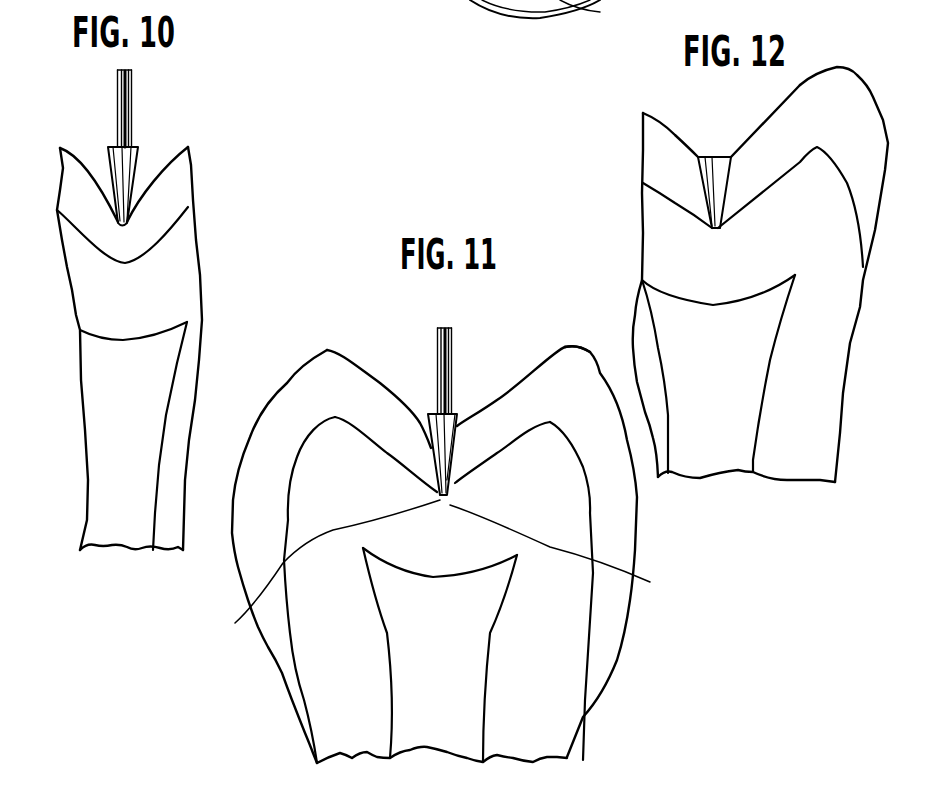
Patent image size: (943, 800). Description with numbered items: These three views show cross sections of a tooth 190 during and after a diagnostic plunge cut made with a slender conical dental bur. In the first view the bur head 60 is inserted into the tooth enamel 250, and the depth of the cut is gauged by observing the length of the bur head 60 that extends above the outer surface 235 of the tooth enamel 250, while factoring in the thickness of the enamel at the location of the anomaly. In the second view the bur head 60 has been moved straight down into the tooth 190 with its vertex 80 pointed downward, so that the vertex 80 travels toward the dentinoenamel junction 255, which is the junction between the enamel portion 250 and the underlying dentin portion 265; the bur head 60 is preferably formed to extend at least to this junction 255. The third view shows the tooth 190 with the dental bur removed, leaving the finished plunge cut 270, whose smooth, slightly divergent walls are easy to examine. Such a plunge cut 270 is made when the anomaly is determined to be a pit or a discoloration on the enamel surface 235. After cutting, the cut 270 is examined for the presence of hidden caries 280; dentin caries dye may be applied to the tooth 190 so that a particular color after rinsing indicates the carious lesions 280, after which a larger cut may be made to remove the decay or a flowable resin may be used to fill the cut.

In FIG. 10, the bur head 60 is at (112, 152).
In FIG. 11, the vertex 80 is at (418, 554).
In FIG. 11, the tooth 190 is at (406, 385).
In FIG. 12, the tooth 190 is at (838, 65).
In FIG. 10, the outer surface of the tooth enamel 235 is at (176, 160).
In FIG. 11, the outer surface of the tooth enamel 235 is at (500, 393).
In FIG. 12, the outer surface of the tooth enamel 235 is at (721, 121).
In FIG. 10, the tooth enamel 250 is at (170, 188).
In FIG. 11, the tooth enamel 250 is at (542, 397).
In FIG. 12, the tooth enamel 250 is at (843, 104).
In FIG. 10, the dentinoenamel junction 255 is at (178, 222).
In FIG. 11, the dentinoenamel junction 255 is at (490, 462).
In FIG. 12, the dentinoenamel junction 255 is at (781, 170).
In FIG. 10, the dentin portion 265 is at (133, 436).
In FIG. 11, the dentin portion 265 is at (538, 597).
In FIG. 12, the dentin portion 265 is at (815, 320).
In FIG. 11, the plunge cut 270 is at (418, 428).
In FIG. 12, the plunge cut 270 is at (706, 187).
In FIG. 10, the hidden caries 280 is at (137, 277).
In FIG. 11, the hidden caries 280 is at (572, 553).
In FIG. 12, the hidden caries 280 is at (723, 225).